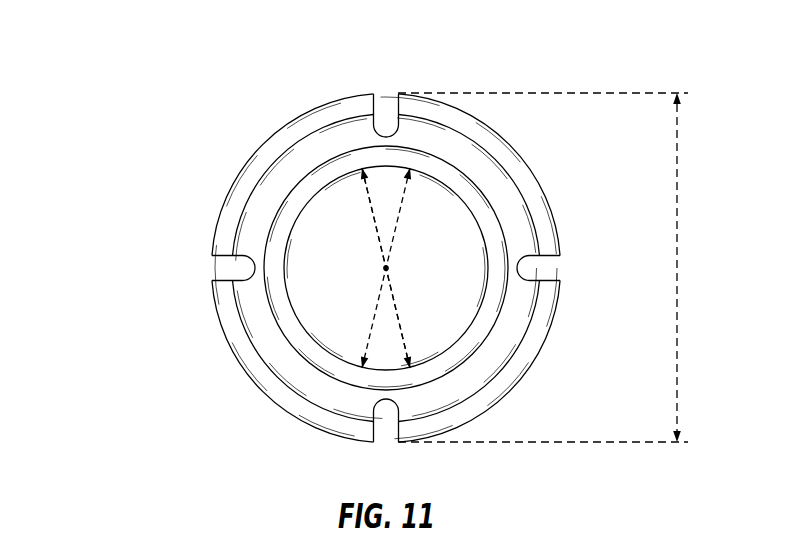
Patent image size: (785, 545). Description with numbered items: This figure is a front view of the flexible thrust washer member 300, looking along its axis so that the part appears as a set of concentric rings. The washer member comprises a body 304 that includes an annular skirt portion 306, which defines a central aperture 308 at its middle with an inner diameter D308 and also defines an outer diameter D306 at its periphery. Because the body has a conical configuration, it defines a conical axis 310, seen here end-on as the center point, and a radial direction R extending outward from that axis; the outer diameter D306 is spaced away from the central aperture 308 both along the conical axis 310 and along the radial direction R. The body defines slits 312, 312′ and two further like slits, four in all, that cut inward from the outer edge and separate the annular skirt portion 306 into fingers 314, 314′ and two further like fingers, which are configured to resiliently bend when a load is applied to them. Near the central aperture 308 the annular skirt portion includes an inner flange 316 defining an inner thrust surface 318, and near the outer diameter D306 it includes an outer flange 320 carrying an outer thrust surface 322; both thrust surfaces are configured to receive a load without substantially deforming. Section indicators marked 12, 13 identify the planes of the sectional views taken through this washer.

The flexible thrust washer member 300 is at (294, 227).
The body 304 is at (165, 57).
The annular skirt portion 306 is at (401, 263).
The central aperture 308 is at (445, 208).
The conical axis 310 is at (383, 268).
The slit 312 is at (385, 108).
The slit 312′ is at (222, 265).
The finger 314 is at (432, 137).
The finger 314′ is at (260, 203).
The inner flange 316 is at (460, 268).
The inner thrust surface 318 is at (497, 283).
The outer flange 320 is at (405, 268).
The outer thrust surface 322 is at (487, 138).
The outer diameter D306 is at (677, 268).
The inner diameter D308 is at (400, 215).
The radial direction R is at (372, 225).
The section view reference 12 is at (419, 240).
The section view reference 13 is at (262, 145).